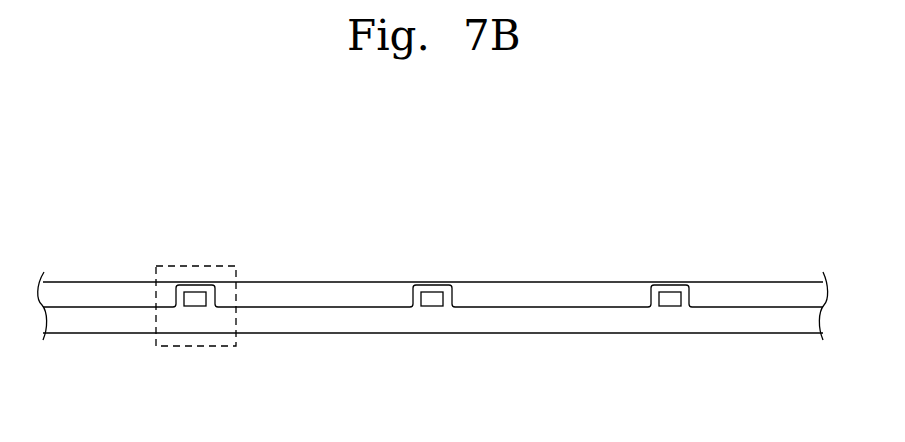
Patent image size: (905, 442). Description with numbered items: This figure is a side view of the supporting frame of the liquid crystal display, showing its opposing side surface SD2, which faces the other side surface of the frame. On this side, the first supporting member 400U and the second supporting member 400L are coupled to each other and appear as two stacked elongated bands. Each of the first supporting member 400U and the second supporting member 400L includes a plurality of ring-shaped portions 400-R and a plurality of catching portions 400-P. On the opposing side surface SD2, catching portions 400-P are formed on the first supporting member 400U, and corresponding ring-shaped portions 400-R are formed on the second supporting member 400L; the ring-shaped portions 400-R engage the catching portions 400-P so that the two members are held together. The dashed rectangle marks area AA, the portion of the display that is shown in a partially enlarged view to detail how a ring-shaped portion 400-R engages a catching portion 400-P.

The ring-shaped portion 400-R is at (195, 290).
The catching portion 400-P is at (432, 301).
The second supporting member 400L is at (541, 317).
The first supporting member 400U is at (718, 290).
The area AA is at (213, 347).
The opposing side surface SD2 is at (740, 166).